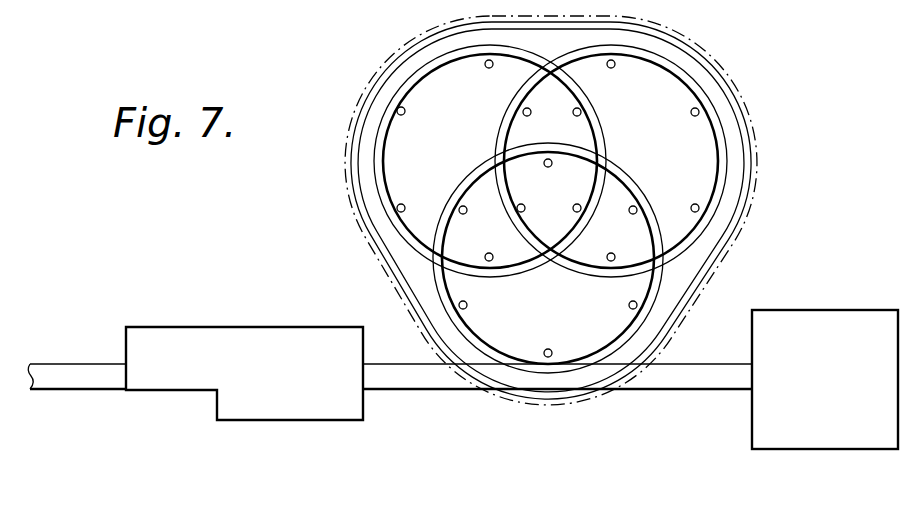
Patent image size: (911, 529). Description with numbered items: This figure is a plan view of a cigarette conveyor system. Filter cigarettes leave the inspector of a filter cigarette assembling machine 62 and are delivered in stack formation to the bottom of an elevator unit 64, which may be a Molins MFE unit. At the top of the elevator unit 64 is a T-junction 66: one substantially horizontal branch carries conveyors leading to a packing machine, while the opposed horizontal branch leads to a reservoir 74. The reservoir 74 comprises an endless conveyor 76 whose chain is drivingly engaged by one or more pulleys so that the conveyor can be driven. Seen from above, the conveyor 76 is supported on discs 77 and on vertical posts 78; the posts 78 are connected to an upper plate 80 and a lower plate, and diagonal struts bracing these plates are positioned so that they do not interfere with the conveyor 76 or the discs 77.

The filter cigarette assembling machine 62 is at (838, 393).
The elevator unit 64 is at (286, 382).
The T-junction 66 is at (672, 392).
The reservoir 74 is at (741, 88).
The conveyor 76 is at (416, 392).
The discs 77 is at (424, 256).
The vertical posts 78 is at (692, 116).
The upper plate 80 is at (368, 238).